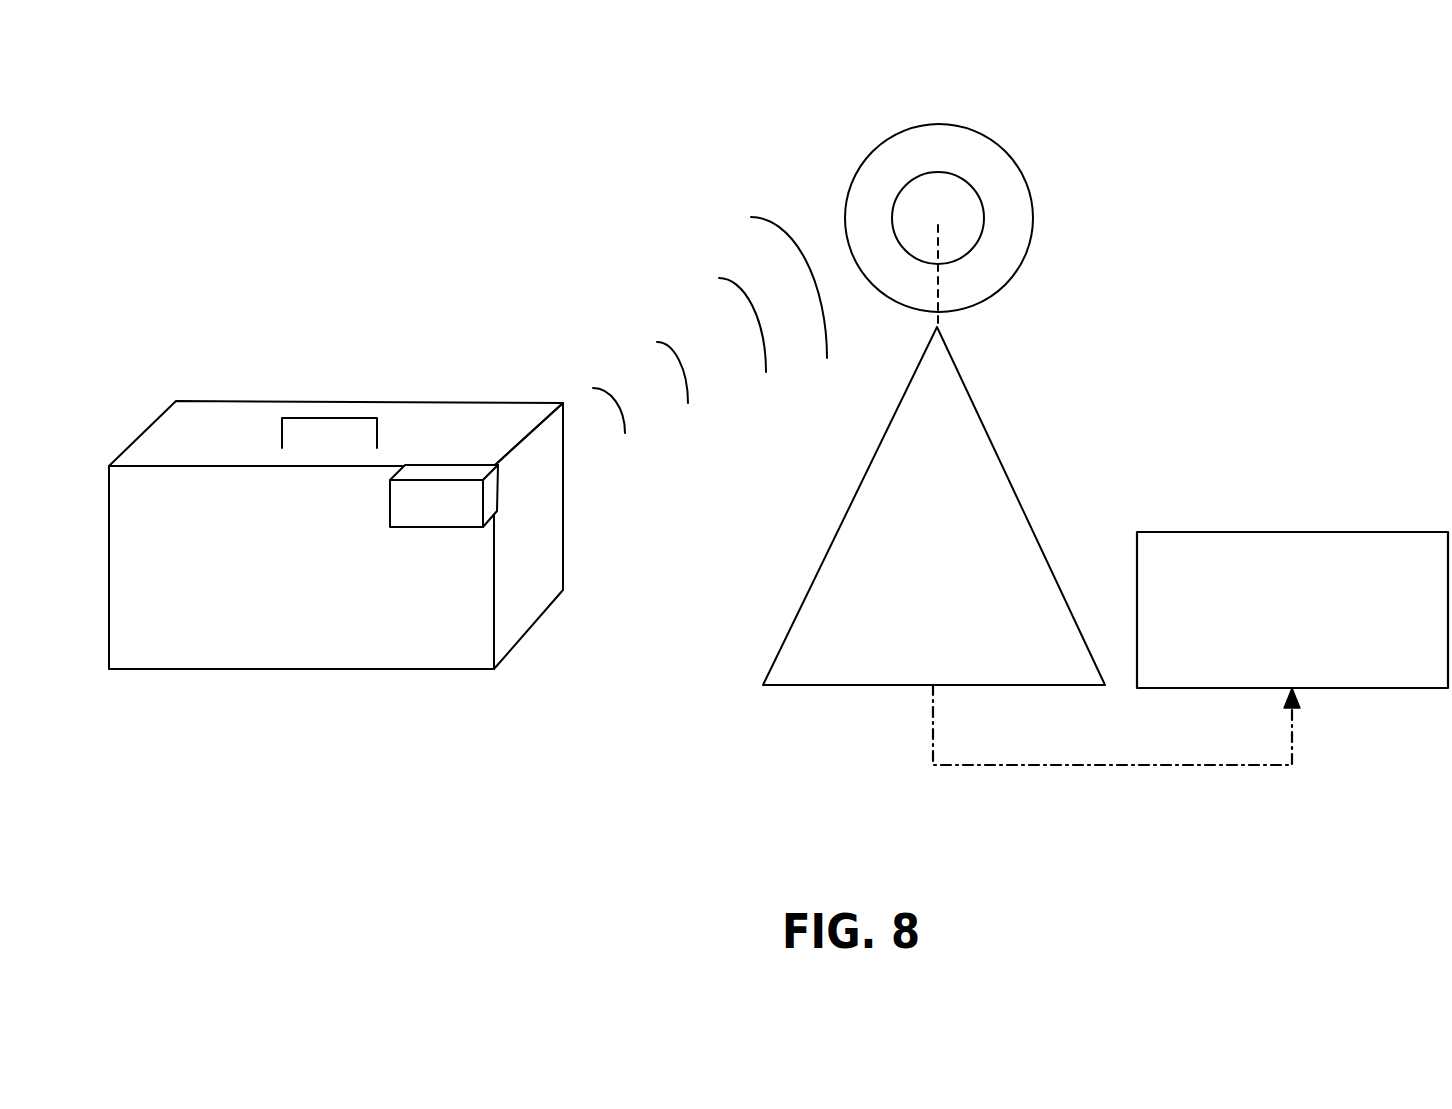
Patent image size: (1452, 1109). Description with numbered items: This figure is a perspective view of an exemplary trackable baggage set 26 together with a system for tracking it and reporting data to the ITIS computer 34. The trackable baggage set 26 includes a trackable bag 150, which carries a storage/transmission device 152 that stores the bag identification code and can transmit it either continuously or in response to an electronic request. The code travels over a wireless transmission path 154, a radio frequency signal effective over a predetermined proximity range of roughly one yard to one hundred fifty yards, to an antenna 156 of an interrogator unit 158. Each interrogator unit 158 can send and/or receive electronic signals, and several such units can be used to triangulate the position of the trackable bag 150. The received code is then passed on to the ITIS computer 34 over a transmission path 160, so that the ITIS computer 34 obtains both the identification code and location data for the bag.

The trackable baggage set 26 is at (230, 347).
The trackable bag 150 is at (313, 401).
The storage/transmission device 152 is at (467, 511).
The wireless transmission path 154 is at (673, 351).
The antenna 156 is at (983, 203).
The interrogator unit 158 is at (952, 498).
The ITIS computer 34 is at (1183, 548).
The transmission path 160 is at (1103, 775).